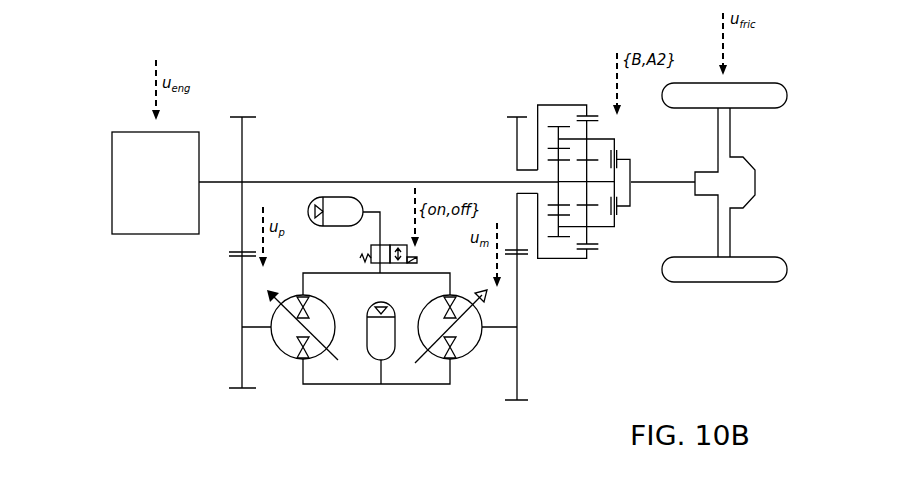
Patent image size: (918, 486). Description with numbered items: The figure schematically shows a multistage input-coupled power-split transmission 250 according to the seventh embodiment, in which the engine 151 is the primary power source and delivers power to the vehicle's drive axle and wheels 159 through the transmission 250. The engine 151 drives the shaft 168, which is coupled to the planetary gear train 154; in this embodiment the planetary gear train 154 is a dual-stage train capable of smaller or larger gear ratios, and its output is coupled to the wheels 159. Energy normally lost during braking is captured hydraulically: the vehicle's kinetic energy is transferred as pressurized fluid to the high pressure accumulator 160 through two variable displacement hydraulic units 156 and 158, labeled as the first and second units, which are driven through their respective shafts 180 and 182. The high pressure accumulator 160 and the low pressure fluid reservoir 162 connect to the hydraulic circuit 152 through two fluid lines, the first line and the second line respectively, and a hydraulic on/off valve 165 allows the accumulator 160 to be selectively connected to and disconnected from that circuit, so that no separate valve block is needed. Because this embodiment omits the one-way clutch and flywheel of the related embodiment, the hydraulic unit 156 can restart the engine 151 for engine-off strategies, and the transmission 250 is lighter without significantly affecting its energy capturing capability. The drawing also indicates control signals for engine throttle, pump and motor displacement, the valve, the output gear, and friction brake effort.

The combustion engine 151 is at (153, 233).
The multistage input-coupled PSD transmission 250 is at (303, 94).
The shaft 168 is at (445, 181).
The pump shaft 180 is at (257, 328).
The high pressure accumulator 160 is at (332, 197).
The hydraulic on/off valve 165 is at (393, 244).
The hydrostatic circuit 152 is at (282, 441).
The variable displacement hydraulic unit 156 is at (290, 358).
The low pressure fluid reservoir 162 is at (387, 358).
The variable displacement hydraulic unit 158 is at (468, 352).
The motor shaft 182 is at (495, 327).
The planetary gear train 154 is at (526, 84).
The drive axle and wheels 159 is at (736, 310).